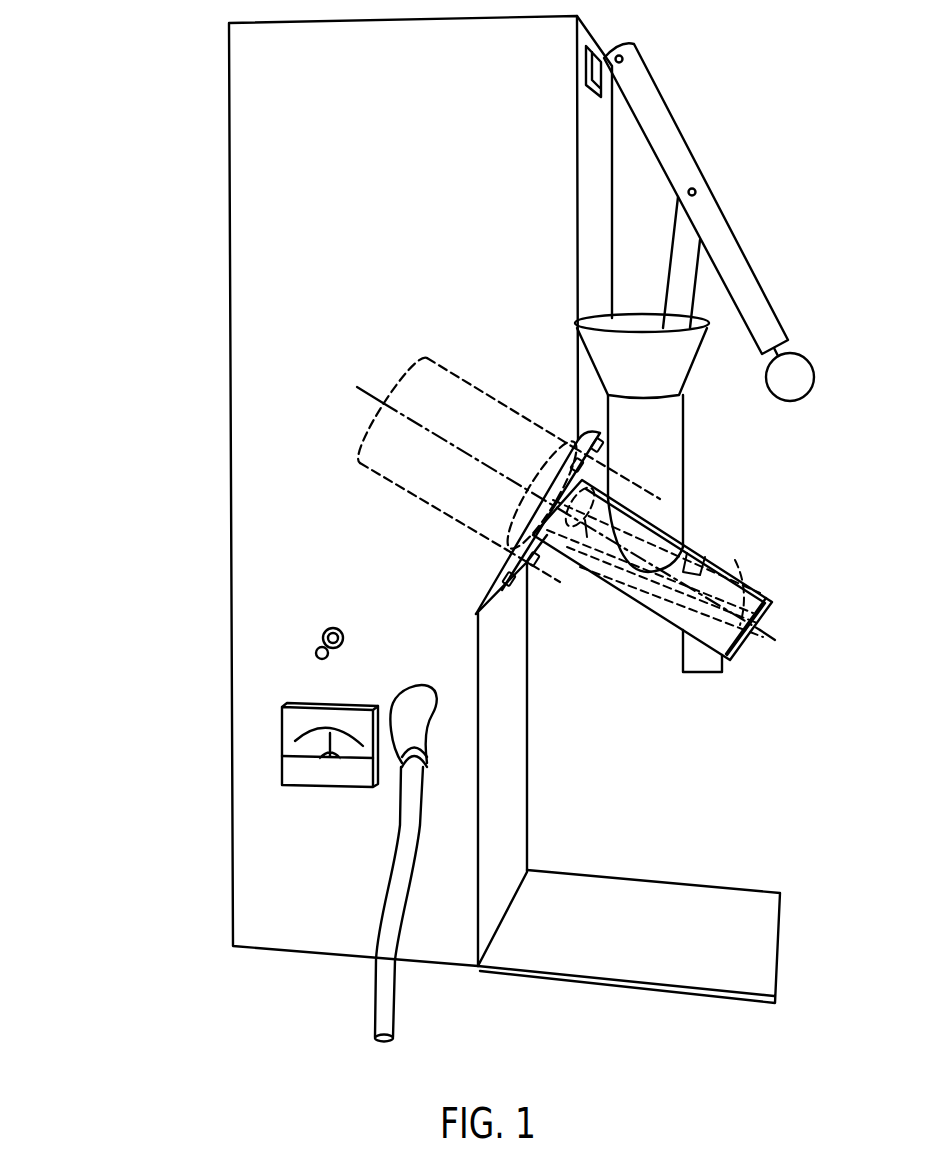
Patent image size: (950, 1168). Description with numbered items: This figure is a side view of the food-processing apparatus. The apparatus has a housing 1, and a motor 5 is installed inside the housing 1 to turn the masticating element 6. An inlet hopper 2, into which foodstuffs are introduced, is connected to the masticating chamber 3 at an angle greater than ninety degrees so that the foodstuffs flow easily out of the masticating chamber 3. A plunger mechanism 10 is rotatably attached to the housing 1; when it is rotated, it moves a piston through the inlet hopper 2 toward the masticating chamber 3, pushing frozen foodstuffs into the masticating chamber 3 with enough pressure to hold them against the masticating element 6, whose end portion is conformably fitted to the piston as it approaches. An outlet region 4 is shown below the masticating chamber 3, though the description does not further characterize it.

The housing 1 is at (230, 253).
The plunger mechanism 10 is at (703, 184).
The inlet hopper 2 is at (682, 462).
The masticating chamber 3 is at (752, 590).
The outlet 4 is at (722, 668).
The motor 5 is at (430, 505).
The masticating element 6 is at (627, 563).